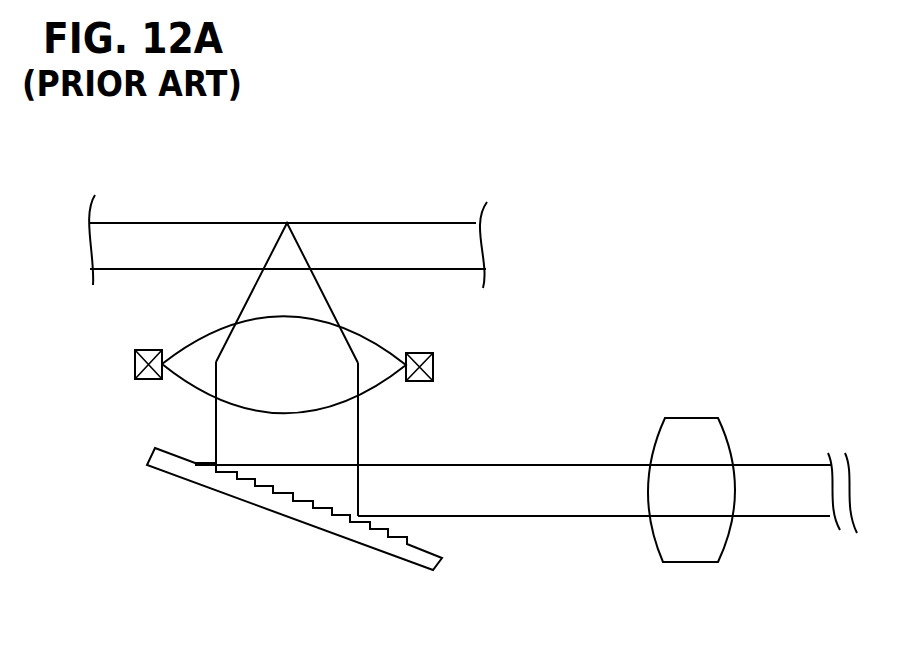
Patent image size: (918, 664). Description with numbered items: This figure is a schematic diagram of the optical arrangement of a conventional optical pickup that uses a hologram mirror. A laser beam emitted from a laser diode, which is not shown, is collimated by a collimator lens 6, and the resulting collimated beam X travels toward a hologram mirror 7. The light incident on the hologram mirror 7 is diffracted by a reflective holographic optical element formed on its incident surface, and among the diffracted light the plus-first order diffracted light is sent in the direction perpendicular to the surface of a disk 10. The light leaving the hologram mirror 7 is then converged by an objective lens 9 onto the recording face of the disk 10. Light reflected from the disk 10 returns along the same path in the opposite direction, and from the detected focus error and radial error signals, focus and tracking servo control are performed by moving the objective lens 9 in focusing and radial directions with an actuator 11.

The disk 10 is at (372, 232).
The objective lens 9 is at (374, 352).
The actuator 11 is at (135, 361).
The hologram mirror 7 is at (280, 507).
The collimated beam X is at (555, 510).
The collimator lens 6 is at (686, 553).